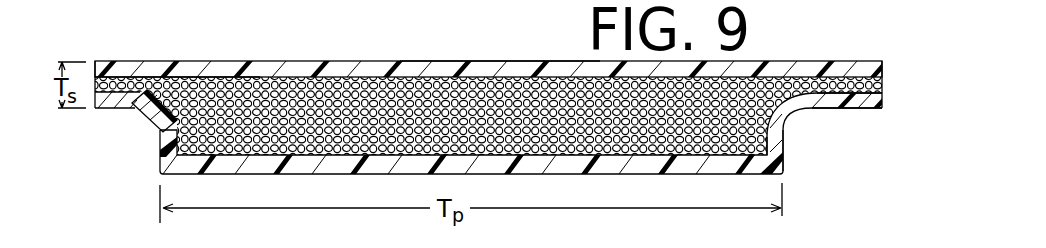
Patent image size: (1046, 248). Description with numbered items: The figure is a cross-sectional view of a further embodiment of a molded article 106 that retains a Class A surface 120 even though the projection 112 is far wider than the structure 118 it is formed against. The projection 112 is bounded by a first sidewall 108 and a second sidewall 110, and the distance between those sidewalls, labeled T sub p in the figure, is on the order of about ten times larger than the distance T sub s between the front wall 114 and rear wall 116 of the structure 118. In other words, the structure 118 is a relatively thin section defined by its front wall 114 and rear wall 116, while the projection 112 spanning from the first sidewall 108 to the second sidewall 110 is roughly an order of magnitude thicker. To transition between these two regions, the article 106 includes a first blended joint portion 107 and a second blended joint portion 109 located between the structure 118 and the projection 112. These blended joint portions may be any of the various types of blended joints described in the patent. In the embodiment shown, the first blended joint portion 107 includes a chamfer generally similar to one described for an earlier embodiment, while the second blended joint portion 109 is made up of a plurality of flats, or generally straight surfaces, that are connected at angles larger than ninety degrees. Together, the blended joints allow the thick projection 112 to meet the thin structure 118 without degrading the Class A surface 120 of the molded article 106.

The molded article 106 is at (796, 45).
The first blended joint portion 107 is at (135, 112).
The first sidewall 108 is at (158, 135).
The second blended joint portion 109 is at (795, 123).
The second sidewall 110 is at (775, 150).
The projection 112 is at (770, 135).
The front wall 114 is at (117, 61).
The rear wall 116 is at (96, 108).
The structure 118 is at (158, 77).
The Class A surface 120 is at (492, 63).